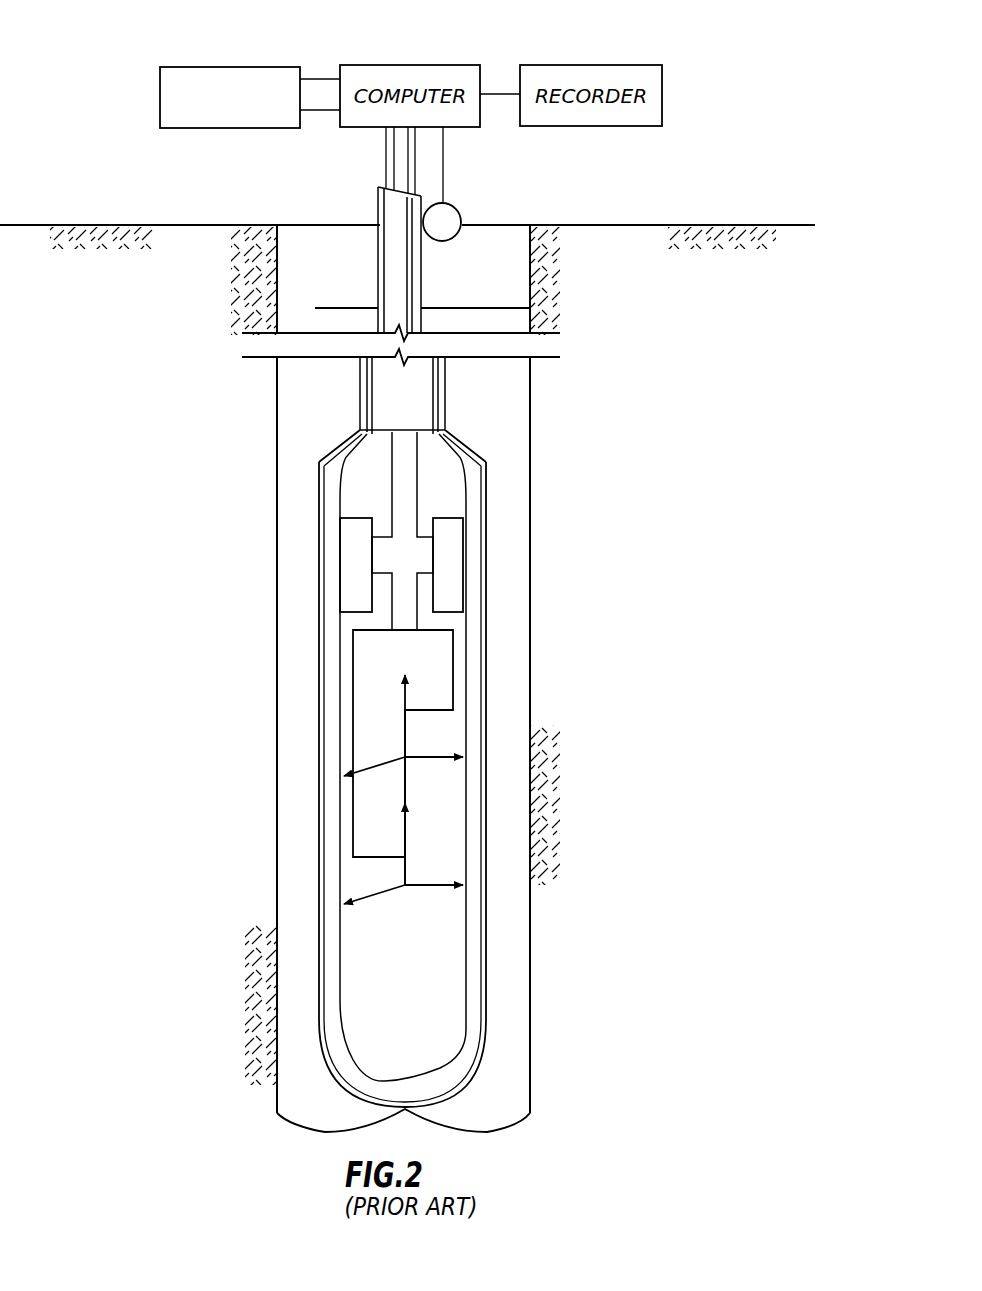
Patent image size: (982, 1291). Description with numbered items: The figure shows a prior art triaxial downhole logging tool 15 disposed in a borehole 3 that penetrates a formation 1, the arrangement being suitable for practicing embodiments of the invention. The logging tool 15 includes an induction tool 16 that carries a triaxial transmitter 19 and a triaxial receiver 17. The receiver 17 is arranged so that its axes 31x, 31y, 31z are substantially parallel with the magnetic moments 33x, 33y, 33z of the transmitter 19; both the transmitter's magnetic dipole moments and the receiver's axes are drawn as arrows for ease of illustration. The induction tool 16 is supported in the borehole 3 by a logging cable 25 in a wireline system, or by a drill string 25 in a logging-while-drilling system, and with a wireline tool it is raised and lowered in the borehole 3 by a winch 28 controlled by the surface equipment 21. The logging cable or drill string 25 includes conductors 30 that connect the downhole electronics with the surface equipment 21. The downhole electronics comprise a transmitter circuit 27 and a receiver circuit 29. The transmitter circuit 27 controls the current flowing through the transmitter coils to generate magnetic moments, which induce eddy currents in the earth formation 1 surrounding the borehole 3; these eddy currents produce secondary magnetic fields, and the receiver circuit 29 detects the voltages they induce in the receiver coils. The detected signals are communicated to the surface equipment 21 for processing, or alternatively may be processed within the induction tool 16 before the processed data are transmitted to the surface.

The formation 1 is at (136, 341).
The borehole 3 is at (320, 278).
The downhole logging tool 15 is at (482, 268).
The induction tool 16 is at (330, 447).
The triaxial receiver 17 is at (414, 898).
The triaxial transmitter 19 is at (386, 735).
The surface equipment 21 is at (160, 95).
The logging cable or drill string 25 is at (393, 212).
The transmitter circuit 27 is at (353, 561).
The winch 28 is at (451, 207).
The receiver circuit 29 is at (450, 563).
The conductors 30 is at (394, 158).
The receiver axis (x) 31x is at (442, 887).
The receiver axis (y) 31y is at (378, 895).
The receiver axis (z) 31z is at (405, 841).
The transmitter magnetic moment (x) 33x is at (433, 757).
The transmitter magnetic moment (y) 33y is at (378, 765).
The transmitter magnetic moment (z) 33z is at (404, 697).